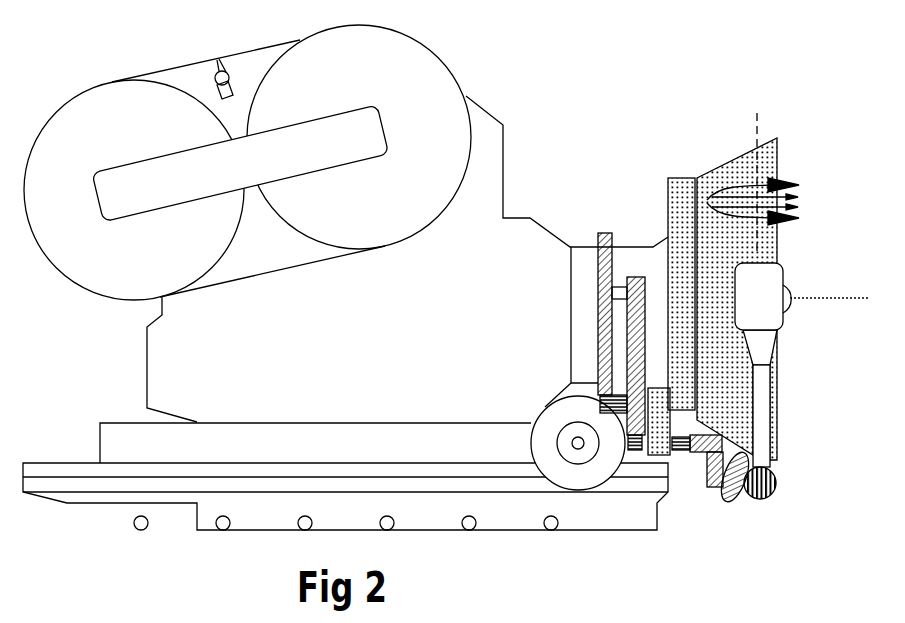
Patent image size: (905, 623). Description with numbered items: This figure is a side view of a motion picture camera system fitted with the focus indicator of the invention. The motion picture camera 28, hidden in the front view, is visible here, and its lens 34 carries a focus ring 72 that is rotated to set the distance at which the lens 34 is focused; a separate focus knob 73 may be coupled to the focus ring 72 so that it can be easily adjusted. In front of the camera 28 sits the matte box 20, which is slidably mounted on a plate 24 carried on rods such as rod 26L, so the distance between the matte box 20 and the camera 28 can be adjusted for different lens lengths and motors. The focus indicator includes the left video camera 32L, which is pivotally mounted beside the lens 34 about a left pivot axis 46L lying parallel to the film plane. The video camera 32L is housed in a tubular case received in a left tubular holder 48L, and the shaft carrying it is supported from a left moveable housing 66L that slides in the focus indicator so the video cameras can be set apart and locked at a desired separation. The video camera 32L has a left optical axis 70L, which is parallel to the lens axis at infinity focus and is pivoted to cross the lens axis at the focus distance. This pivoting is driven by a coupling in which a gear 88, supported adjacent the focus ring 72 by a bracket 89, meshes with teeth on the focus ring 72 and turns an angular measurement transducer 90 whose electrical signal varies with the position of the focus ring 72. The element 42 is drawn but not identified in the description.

The matte box 20 is at (722, 178).
The plate 24 is at (108, 450).
The rod 26L is at (688, 452).
The motion picture camera 28 is at (185, 402).
The left video camera 32L is at (785, 282).
The lens 34 is at (653, 260).
The pivot block 42 is at (715, 488).
The left pivot axis 46L is at (758, 128).
The left tubular holder 48L is at (768, 302).
The left moveable housing 66L is at (775, 487).
The left optical axis 70L is at (810, 298).
The focus ring 72 is at (627, 285).
The focus knob 73 is at (570, 468).
The gear 88 is at (598, 272).
The bracket 89 is at (647, 455).
The angular measurement transducer 90 is at (613, 287).